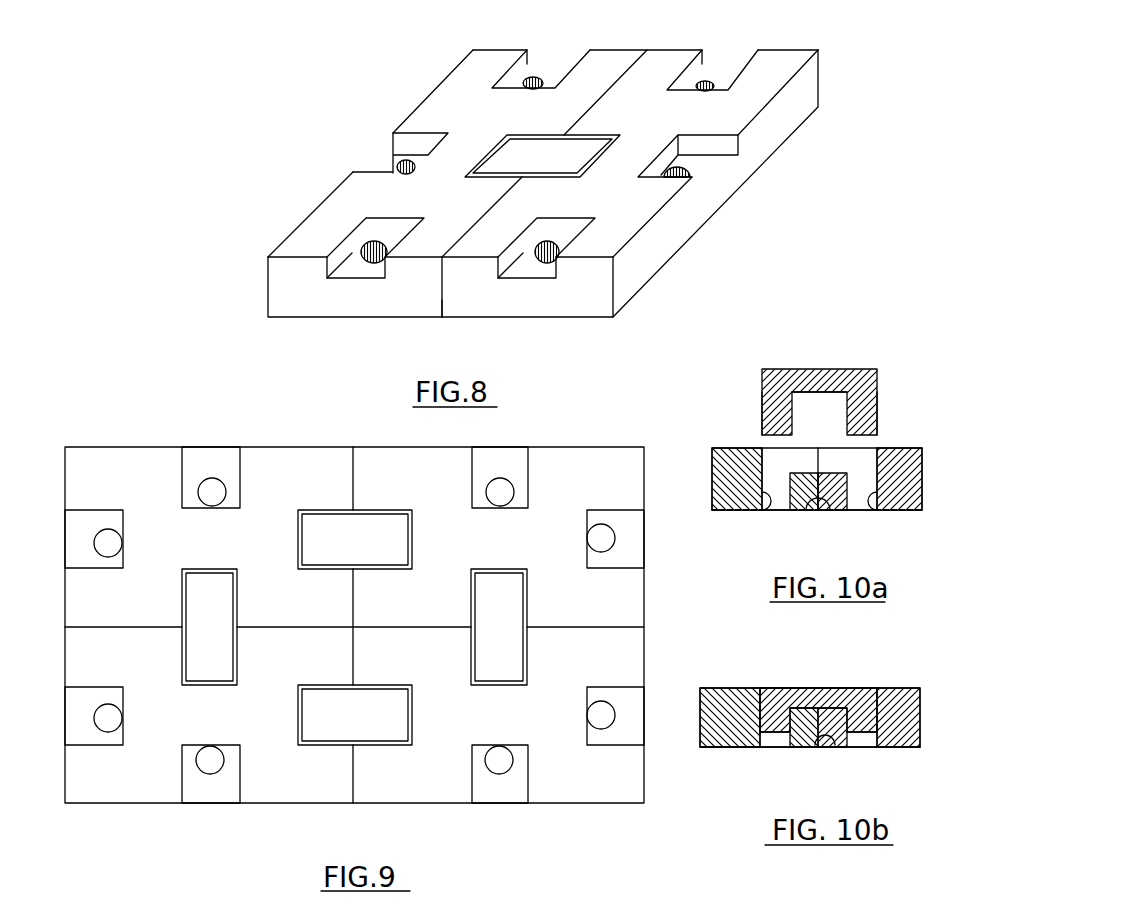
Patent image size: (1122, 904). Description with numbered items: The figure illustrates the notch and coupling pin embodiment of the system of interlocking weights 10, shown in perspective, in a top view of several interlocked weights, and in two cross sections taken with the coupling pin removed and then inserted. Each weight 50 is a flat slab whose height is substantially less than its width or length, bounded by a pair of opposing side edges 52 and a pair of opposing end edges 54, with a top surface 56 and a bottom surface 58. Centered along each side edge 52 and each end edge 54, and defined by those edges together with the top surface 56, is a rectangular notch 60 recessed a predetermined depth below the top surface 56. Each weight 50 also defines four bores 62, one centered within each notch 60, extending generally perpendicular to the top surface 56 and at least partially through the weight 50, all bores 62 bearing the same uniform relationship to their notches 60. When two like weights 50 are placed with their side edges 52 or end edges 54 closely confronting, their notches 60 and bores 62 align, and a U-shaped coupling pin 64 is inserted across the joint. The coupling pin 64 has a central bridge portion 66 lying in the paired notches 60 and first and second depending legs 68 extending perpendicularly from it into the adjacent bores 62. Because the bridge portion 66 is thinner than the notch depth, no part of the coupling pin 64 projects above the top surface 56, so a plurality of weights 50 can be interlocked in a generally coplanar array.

In FIG. 8, the system of interlocking weights 10 is at (380, 88).
In FIG. 9, the system of interlocking weights 10 is at (208, 563).
In FIG. 10a, the system of interlocking weights 10 is at (722, 519).
In FIG. 10b, the system of interlocking weights 10 is at (753, 781).
In FIG. 8, the weight 50 is at (310, 319).
In FIG. 9, the weight 50 is at (121, 443).
In FIG. 10a, the weight 50 is at (729, 444).
In FIG. 10b, the weight 50 is at (726, 684).
In FIG. 8, the side edge 52 is at (439, 97).
In FIG. 9, the side edge 52 is at (330, 450).
In FIG. 10a, the side edge 52 is at (805, 508).
In FIG. 10b, the side edge 52 is at (828, 747).
In FIG. 8, the end edge 54 is at (600, 52).
In FIG. 9, the end edge 54 is at (65, 472).
In FIG. 8, the top surface 56 is at (515, 130).
In FIG. 9, the top surface 56 is at (277, 567).
In FIG. 10a, the top surface 56 is at (750, 447).
In FIG. 10b, the top surface 56 is at (748, 688).
In FIG. 8, the bottom surface 58 is at (487, 317).
In FIG. 10a, the bottom surface 58 is at (700, 511).
In FIG. 10b, the bottom surface 58 is at (705, 747).
In FIG. 8, the notch 60 is at (524, 138).
In FIG. 9, the notch 60 is at (240, 492).
In FIG. 8, the bore 62 is at (535, 78).
In FIG. 9, the bore 62 is at (212, 480).
In FIG. 10a, the bore 62 is at (768, 508).
In FIG. 10b, the bore 62 is at (762, 747).
In FIG. 9, the coupling pin 64 is at (372, 552).
In FIG. 10a, the coupling pin 64 is at (802, 362).
In FIG. 10b, the coupling pin 64 is at (810, 687).
In FIG. 10a, the central bridge portion 66 is at (830, 382).
In FIG. 10b, the central bridge portion 66 is at (858, 663).
In FIG. 10a, the depending leg 68 is at (765, 417).
In FIG. 10b, the depending leg 68 is at (775, 720).